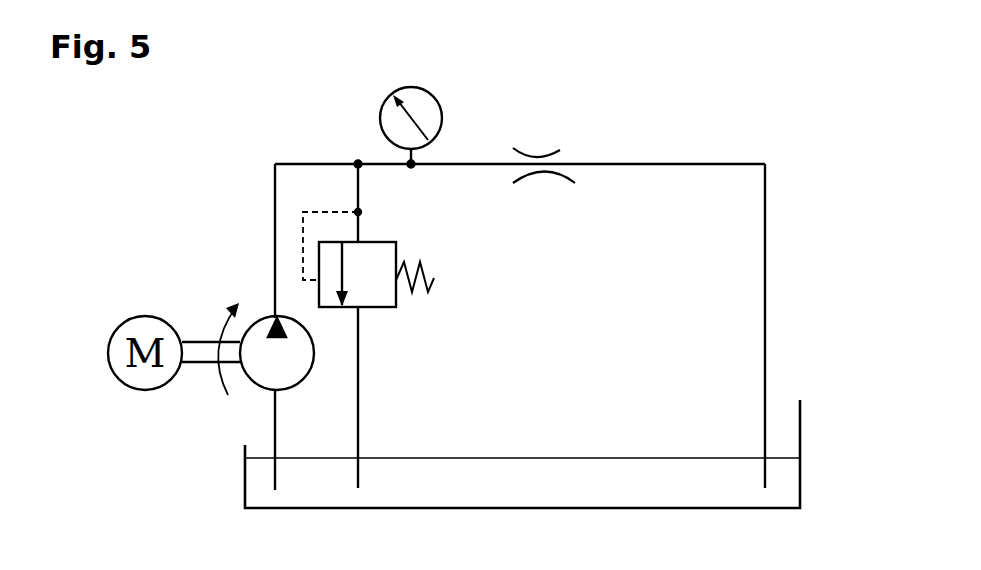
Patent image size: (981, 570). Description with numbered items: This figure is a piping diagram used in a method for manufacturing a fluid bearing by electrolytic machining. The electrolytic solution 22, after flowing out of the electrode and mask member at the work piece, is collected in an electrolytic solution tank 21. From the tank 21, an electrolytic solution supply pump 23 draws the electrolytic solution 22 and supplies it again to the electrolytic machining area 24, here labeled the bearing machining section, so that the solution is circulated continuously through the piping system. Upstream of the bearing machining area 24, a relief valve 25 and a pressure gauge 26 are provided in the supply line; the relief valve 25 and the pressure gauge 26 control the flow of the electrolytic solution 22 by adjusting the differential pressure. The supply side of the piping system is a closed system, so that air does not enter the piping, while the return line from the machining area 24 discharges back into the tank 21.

The electrolytic solution tank 21 is at (800, 470).
The electrolytic solution 22 is at (626, 458).
The electrolytic solution supply pump 23 is at (258, 392).
The electrolytic machining area 24 is at (560, 150).
The relief valve 25 is at (319, 295).
The pressure gauge 26 is at (430, 90).